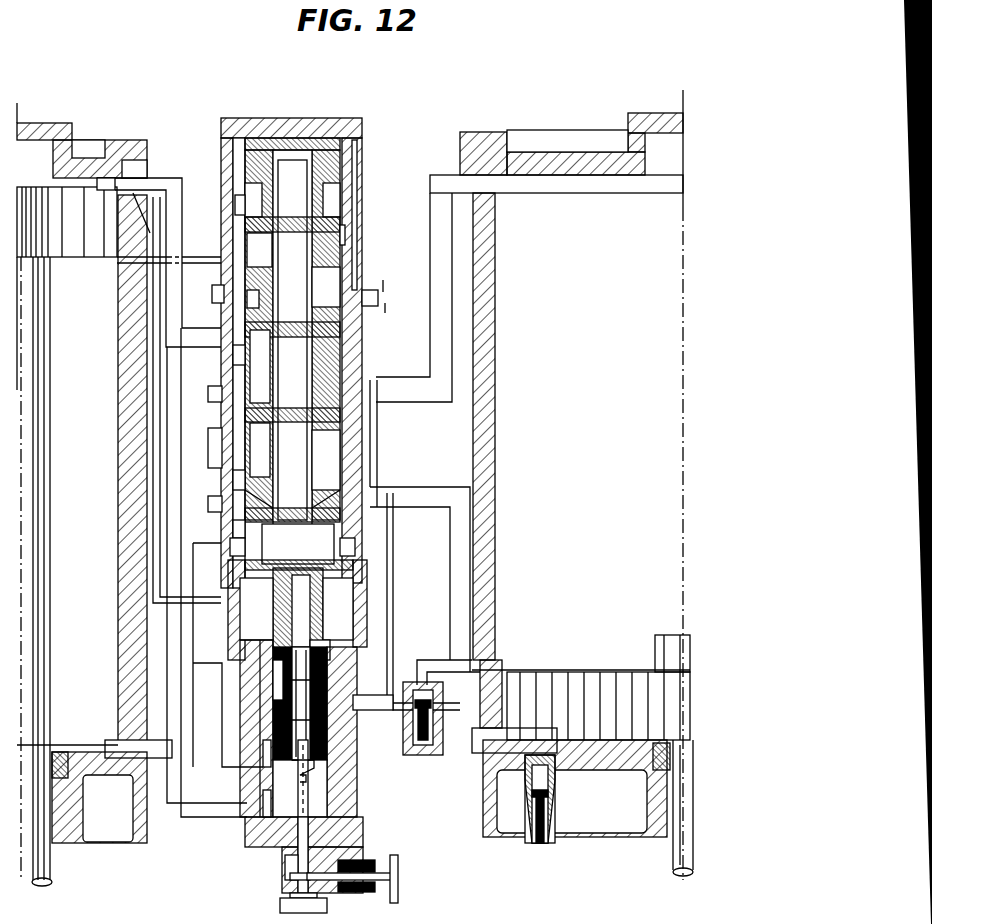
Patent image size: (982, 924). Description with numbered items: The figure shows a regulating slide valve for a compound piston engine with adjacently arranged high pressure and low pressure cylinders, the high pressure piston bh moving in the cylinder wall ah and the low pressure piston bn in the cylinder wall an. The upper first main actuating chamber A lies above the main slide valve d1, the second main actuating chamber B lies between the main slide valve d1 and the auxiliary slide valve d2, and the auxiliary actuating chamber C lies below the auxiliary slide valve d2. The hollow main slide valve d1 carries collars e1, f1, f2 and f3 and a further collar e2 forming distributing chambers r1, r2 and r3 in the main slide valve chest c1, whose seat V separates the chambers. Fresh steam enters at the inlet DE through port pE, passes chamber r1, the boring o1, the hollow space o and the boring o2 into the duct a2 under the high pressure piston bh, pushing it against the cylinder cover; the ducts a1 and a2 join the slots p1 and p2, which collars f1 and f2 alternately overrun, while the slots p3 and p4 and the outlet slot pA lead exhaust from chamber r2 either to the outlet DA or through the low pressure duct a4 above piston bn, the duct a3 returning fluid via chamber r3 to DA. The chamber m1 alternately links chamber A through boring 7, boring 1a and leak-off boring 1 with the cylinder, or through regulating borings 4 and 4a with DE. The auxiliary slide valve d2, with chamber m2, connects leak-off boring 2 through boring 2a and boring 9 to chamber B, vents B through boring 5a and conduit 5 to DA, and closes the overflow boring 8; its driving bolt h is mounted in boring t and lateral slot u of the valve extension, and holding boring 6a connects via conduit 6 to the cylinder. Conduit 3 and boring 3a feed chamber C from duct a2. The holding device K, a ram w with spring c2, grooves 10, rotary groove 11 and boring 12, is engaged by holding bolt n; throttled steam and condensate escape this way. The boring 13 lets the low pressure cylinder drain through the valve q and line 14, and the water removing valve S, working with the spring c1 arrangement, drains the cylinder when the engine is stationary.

The first main actuating chamber A is at (364, 127).
The second main actuating chamber B is at (345, 620).
The auxiliary actuating chamber C is at (315, 802).
The leak-off boring 1 is at (200, 260).
The boring 1a is at (243, 200).
The leak-off boring 2 is at (207, 663).
The boring in auxiliary slide valve chest 2a is at (266, 750).
The actuating conduit 3 is at (192, 805).
The boring 3a is at (266, 795).
The fresh motive fluid regulating boring 4 is at (357, 257).
The fresh motive fluid regulating boring 4a is at (345, 222).
The conduit 5 is at (393, 547).
The air extracting boring 5a is at (373, 714).
The holding conduit 6 is at (150, 375).
The motive fluid holding boring 6a is at (235, 578).
The boring in main slide valve 7 is at (278, 168).
The overflow boring 8 is at (240, 620).
The boring in auxiliary slide valve 9 is at (325, 655).
The water removing grooves 10 is at (363, 845).
The rotary groove 11 is at (285, 862).
The boring 12 is at (295, 877).
The boring 13 is at (430, 668).
The line 14 is at (435, 740).
The duct a1 is at (172, 185).
The duct a2 is at (172, 758).
The cylinder duct a3 is at (445, 188).
The low pressure cylinder duct a4 is at (460, 745).
The cylinder wall (rear) ah is at (128, 375).
The cylinder wall (front) an is at (490, 525).
The high pressure piston bh is at (77, 245).
The low pressure piston bn is at (560, 683).
The main slide valve chest c1 is at (357, 185).
The spring c2 is at (330, 820).
The main slide valve d1 is at (322, 460).
The auxiliary slide valve d2 is at (276, 725).
The collar e1 is at (334, 225).
The control edge e2 is at (320, 549).
The distributing collar f1 is at (320, 318).
The distributing collar f2 is at (334, 513).
The annular groove f3 is at (334, 412).
The driving bolt h is at (310, 680).
The holding device K is at (345, 865).
The main slide valve chamber m1 is at (332, 200).
The chamber of auxiliary slide valve m2 is at (278, 680).
The holding bolt n is at (398, 887).
The hollow space o is at (292, 355).
The boring o1 is at (318, 285).
The boring o2 is at (262, 547).
The inlet pressure port pE is at (236, 282).
The outlet slot pA is at (238, 483).
The slot p1 is at (236, 360).
The slot p2 is at (236, 528).
The port p3 is at (240, 393).
The slot p4 is at (236, 504).
The valve q is at (403, 752).
The distributing chamber r1 is at (259, 256).
The distributing chamber r2 is at (260, 450).
The annular duct r3 is at (260, 366).
The water removing valve S is at (552, 815).
The boring t is at (308, 592).
The lateral slot u is at (310, 633).
The valve seat V is at (254, 298).
The adjusting spindle w is at (303, 830).
The motive fluid inlet DE is at (420, 298).
The lateral outlet DA is at (212, 445).